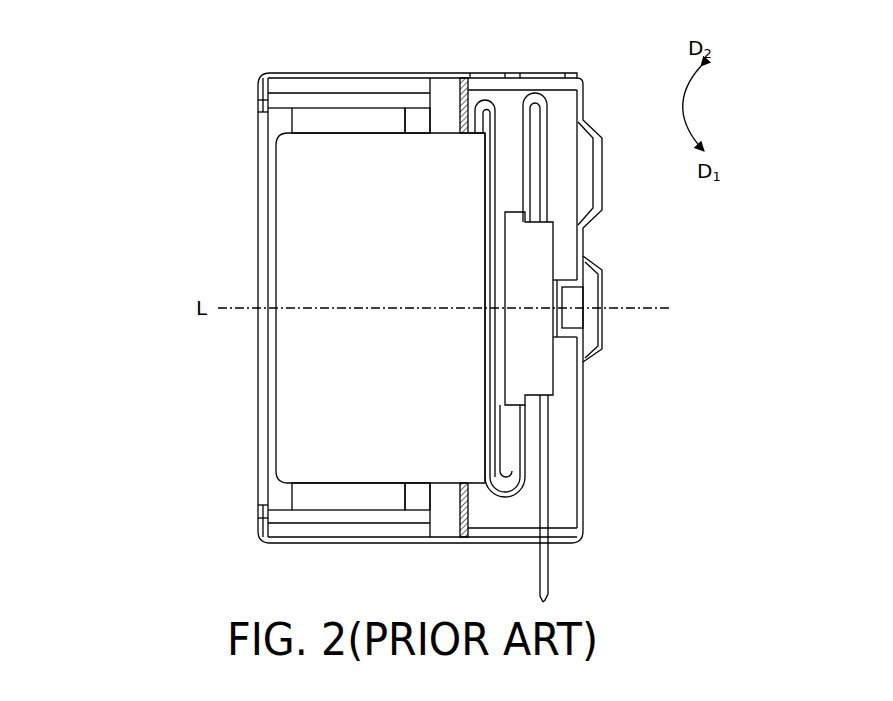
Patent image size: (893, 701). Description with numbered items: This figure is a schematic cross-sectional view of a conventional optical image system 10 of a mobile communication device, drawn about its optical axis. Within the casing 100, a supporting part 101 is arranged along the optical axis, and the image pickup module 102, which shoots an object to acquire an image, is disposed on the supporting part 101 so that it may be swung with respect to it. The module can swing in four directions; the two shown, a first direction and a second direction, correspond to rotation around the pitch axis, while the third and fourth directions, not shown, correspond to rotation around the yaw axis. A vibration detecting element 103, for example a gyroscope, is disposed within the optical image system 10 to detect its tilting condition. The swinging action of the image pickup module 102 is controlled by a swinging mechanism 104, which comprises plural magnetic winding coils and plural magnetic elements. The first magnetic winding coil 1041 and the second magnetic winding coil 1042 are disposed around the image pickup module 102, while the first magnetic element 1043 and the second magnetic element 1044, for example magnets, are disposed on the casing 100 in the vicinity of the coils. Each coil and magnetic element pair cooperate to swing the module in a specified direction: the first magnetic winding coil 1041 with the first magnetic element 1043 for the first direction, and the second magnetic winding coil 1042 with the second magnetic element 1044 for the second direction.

The optical image system 10 is at (133, 108).
The casing 100 is at (265, 493).
The supporting part 101 is at (556, 312).
The image pickup module 102 is at (290, 235).
The vibration detecting element 103 is at (527, 257).
The swinging mechanism 104 is at (270, 103).
The first magnetic winding coil 1041 is at (323, 493).
The second magnetic winding coil 1042 is at (337, 125).
The first magnetic element 1043 is at (365, 528).
The second magnetic element 1044 is at (325, 88).